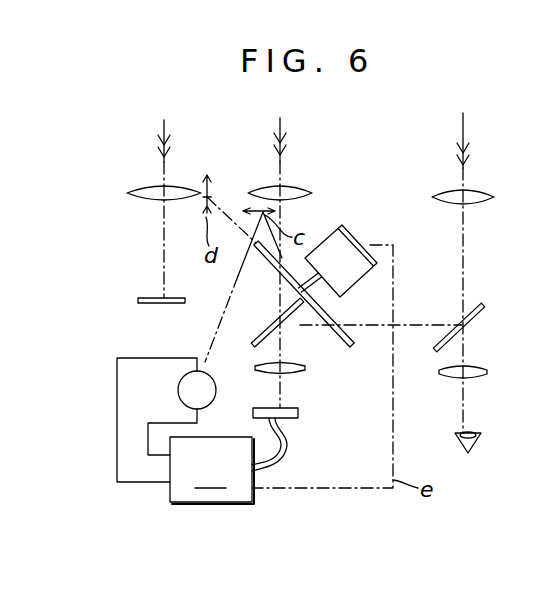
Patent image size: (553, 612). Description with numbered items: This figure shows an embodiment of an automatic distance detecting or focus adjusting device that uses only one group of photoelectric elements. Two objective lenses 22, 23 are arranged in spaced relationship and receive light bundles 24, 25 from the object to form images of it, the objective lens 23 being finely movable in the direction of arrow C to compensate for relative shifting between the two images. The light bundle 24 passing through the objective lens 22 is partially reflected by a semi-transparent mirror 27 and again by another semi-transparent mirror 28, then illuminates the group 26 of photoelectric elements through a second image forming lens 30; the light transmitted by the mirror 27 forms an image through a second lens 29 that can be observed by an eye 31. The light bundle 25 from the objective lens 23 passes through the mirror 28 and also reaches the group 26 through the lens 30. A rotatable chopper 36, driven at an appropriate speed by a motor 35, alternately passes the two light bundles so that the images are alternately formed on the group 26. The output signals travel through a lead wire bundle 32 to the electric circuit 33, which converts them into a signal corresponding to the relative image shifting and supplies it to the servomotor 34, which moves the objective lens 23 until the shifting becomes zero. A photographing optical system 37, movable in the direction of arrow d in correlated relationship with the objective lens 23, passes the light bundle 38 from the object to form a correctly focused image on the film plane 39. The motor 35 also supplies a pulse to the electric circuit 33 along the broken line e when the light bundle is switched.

The objective lens 22 is at (478, 190).
The objective lens 23 is at (300, 188).
The light bundle 24 is at (466, 136).
The light bundle 25 is at (283, 131).
The group of photoelectric elements 26 is at (299, 418).
The semi-transparent mirror 27 is at (480, 313).
The semi-transparent mirror 28 is at (257, 342).
The second lens 29 is at (482, 368).
The second image forming lens 30 is at (298, 372).
The eye 31 is at (478, 443).
The lead wire bundle 32 is at (283, 458).
The electric circuit 33 is at (212, 470).
The servomotor 34 is at (217, 392).
The motor 35 is at (343, 240).
The chopper 36 is at (353, 345).
The photographing optical system 37 is at (181, 186).
The light bundle 38 is at (166, 131).
The film plane 39 is at (152, 297).